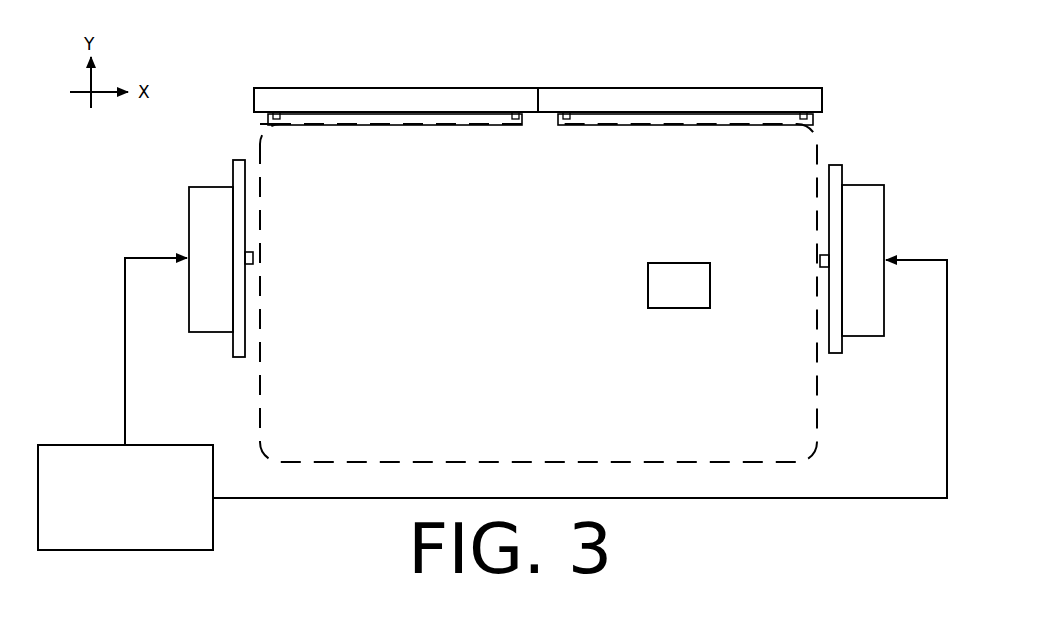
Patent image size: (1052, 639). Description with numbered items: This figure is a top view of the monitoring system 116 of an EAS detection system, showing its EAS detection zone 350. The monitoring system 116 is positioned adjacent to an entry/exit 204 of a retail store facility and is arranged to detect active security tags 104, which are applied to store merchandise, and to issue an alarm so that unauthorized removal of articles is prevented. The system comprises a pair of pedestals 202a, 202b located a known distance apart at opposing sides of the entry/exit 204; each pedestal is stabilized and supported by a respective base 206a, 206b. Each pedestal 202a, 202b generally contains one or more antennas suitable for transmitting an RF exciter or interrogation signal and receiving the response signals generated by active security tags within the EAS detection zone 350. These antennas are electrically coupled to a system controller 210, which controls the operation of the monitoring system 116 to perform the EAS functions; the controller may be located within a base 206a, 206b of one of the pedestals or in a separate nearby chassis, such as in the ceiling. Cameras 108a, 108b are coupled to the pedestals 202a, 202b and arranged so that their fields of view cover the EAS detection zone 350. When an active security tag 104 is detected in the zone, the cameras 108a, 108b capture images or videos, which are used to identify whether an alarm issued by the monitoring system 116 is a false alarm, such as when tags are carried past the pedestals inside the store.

The monitoring system 116 is at (884, 68).
The entry/exit 204 is at (723, 76).
The base 206a is at (189, 205).
The base 206b is at (871, 185).
The camera 108a is at (258, 261).
The camera 108b is at (820, 258).
The pedestal 202a is at (233, 339).
The pedestal 202b is at (842, 338).
The security tag 104 is at (679, 285).
The EAS detection zone 350 is at (447, 461).
The system controller 210 is at (492, 404).